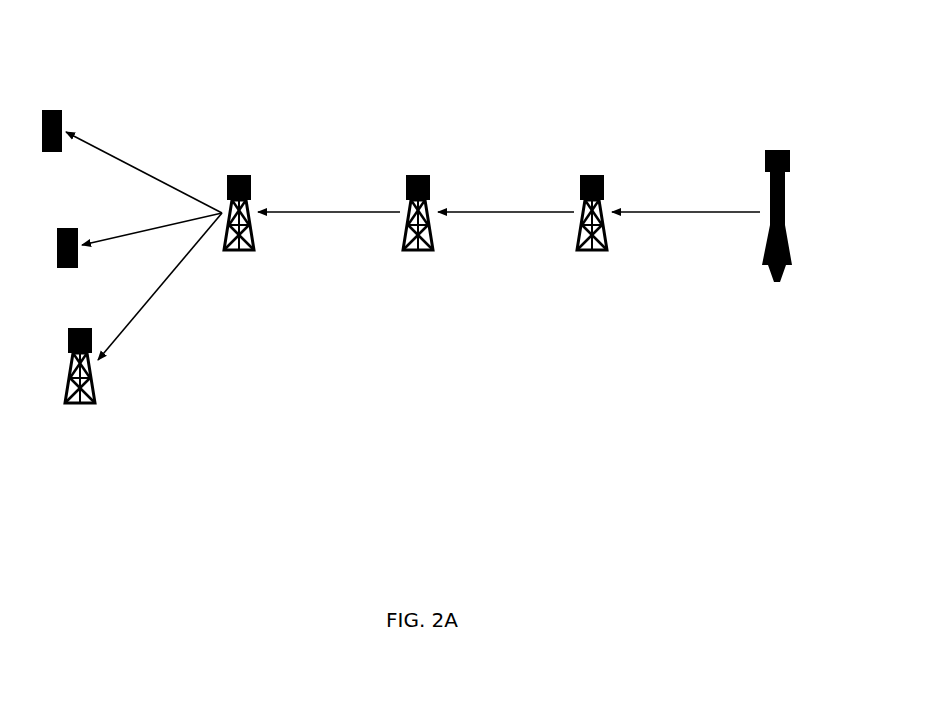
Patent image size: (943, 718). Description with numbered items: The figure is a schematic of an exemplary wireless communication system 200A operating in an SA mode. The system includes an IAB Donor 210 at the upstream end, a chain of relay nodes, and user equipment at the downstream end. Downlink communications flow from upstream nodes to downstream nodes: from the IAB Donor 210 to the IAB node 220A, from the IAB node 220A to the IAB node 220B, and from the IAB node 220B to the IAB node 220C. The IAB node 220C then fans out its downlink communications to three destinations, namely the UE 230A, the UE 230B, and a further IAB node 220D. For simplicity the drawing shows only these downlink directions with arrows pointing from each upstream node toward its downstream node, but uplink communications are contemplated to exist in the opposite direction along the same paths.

The wireless communication system 200A is at (735, 34).
The IAB Donor 210 is at (775, 150).
The IAB node 220A is at (594, 172).
The IAB node 220B is at (420, 172).
The IAB node 220C is at (240, 172).
The IAB node 220D is at (82, 325).
The UE 230A is at (64, 110).
The UE 230B is at (74, 228).